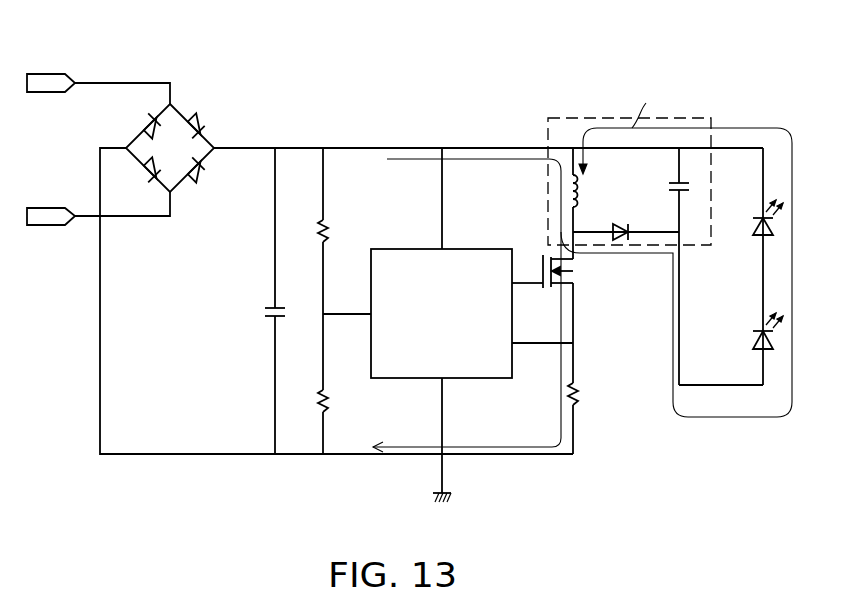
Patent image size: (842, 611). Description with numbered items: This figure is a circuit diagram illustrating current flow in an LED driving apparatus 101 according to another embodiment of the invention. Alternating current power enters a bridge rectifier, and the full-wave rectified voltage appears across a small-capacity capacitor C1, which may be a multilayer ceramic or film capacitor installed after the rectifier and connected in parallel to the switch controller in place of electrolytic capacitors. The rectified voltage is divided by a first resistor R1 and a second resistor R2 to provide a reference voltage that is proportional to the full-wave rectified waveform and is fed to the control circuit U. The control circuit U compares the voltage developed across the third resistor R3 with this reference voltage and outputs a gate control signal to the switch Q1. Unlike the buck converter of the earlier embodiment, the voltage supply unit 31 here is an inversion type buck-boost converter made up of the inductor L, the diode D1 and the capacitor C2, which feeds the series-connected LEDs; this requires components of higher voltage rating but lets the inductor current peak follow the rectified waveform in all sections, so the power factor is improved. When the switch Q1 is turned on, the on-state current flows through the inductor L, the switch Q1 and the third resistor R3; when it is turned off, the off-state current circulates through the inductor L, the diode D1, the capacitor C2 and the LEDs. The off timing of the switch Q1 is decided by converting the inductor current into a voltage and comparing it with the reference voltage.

The LED driving circuit 101 is at (683, 38).
The voltage supply unit 31 is at (591, 117).
The small-capacity capacitor C1 is at (291, 301).
The capacitor C2 is at (664, 266).
The first resistor R1 is at (338, 269).
The second resistor R2 is at (339, 422).
The third resistor R3 is at (557, 397).
The inductor L is at (587, 190).
The diode D1 is at (626, 217).
The switch Q1 is at (575, 260).
The control circuit U is at (396, 249).